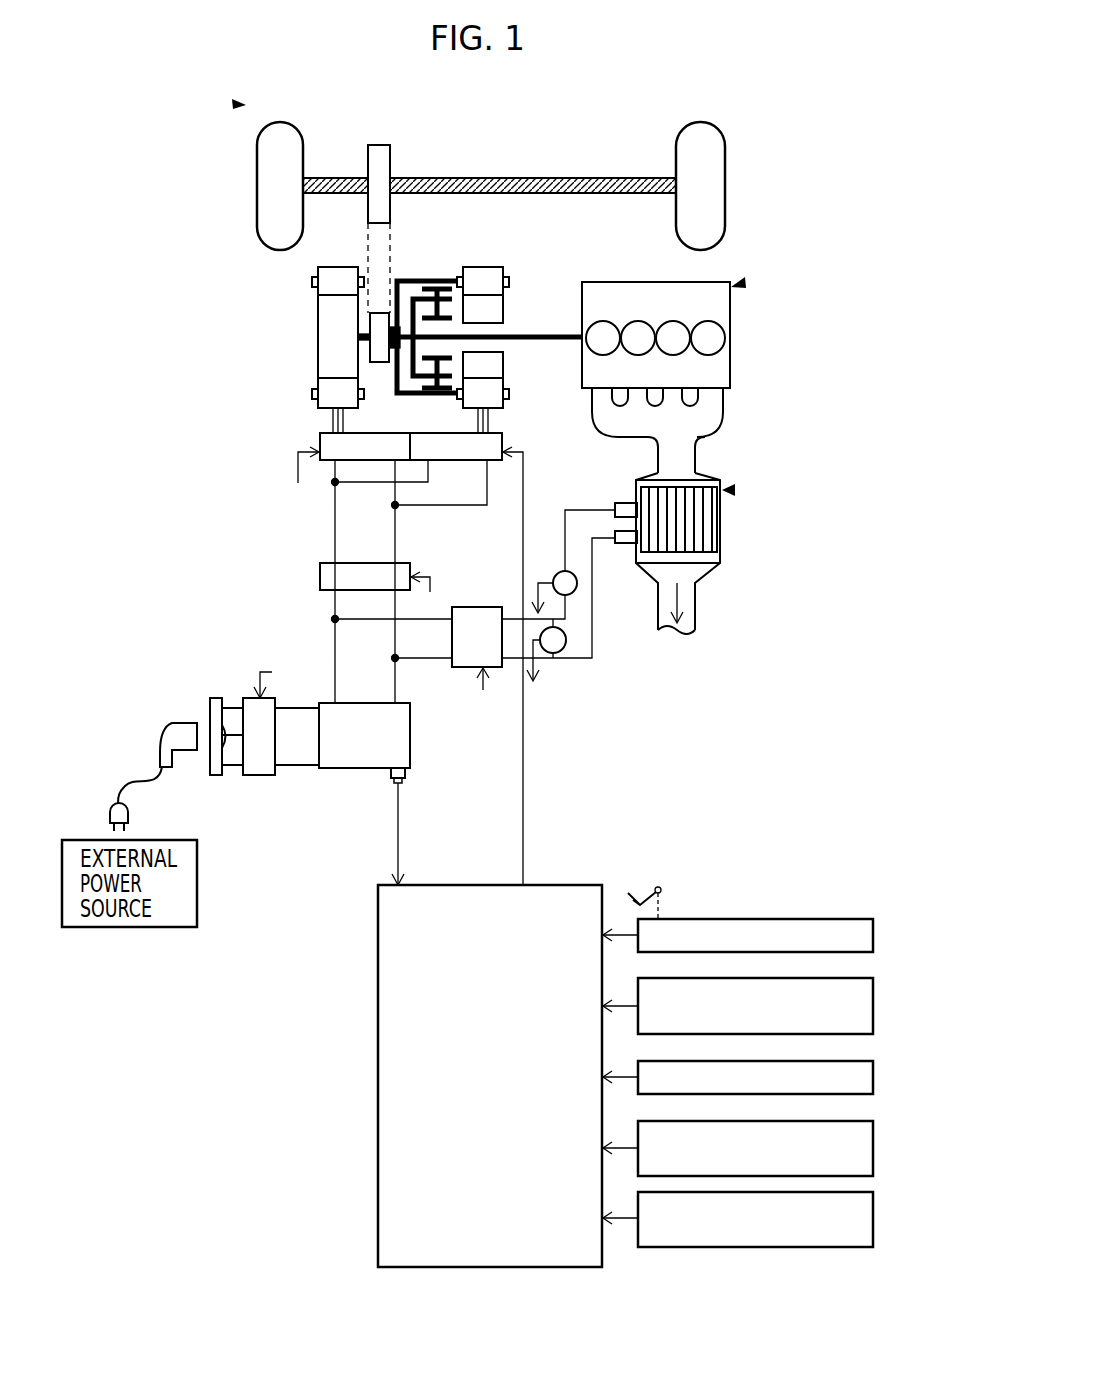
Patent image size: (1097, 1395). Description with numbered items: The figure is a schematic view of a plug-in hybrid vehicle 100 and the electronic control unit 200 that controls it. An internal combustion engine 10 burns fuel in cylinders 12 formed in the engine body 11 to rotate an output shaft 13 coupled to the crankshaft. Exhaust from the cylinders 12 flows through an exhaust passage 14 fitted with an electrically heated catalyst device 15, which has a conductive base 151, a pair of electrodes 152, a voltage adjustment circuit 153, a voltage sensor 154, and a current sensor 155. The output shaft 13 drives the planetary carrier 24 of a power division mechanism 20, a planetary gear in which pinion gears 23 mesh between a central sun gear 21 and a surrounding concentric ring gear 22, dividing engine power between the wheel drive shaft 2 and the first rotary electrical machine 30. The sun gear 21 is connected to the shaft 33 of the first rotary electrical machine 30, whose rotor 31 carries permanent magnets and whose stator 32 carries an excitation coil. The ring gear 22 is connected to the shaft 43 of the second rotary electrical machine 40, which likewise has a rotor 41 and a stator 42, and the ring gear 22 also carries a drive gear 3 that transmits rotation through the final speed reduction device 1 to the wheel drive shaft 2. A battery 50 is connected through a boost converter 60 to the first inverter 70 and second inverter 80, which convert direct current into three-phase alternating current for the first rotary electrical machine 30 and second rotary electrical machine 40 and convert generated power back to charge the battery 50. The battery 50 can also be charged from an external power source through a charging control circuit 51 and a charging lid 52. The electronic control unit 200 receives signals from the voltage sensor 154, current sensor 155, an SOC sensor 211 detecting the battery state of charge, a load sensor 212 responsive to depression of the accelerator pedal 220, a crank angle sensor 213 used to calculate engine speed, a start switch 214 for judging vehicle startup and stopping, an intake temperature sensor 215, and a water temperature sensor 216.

The vehicle 100 is at (238, 104).
The final speed reduction device 1 is at (380, 145).
The wheel drive shaft 2 is at (322, 178).
The drive gear 3 is at (378, 364).
The internal combustion engine 10 is at (605, 317).
The engine body 11 is at (721, 308).
The cylinder 12 is at (710, 337).
The output shaft 13 is at (565, 330).
The exhaust passage 14 is at (700, 452).
The electrically heated catalyst device 15 is at (679, 548).
The conductive base 151 is at (690, 550).
The electrodes 152 is at (615, 534).
The power division mechanism 20 is at (487, 292).
The sun gear 21 is at (393, 232).
The ring gear 22 is at (411, 296).
The pinion gear 23 is at (440, 300).
The planetary carrier 24 is at (423, 289).
The first rotary electrical machine 30 is at (577, 212).
The rotor 31 is at (494, 307).
The stator 32 is at (494, 273).
The shaft 33 is at (487, 318).
The second rotary electrical machine 40 is at (252, 302).
The rotor 41 is at (333, 352).
The stator 42 is at (333, 388).
The shaft 43 is at (362, 332).
The battery 50 is at (412, 744).
The charging control circuit 51 is at (262, 776).
The charging lid 52 is at (215, 776).
The boost converter 60 is at (320, 572).
The first inverter 70 is at (503, 438).
The second inverter 80 is at (318, 444).
The voltage adjustment circuit 153 is at (484, 607).
The voltage sensor 154 is at (563, 653).
The current sensor 155 is at (560, 571).
The electronic control unit 200 is at (568, 883).
The SOC sensor 211 is at (405, 776).
The load sensor 212 is at (763, 919).
The crank angle sensor 213 is at (867, 978).
The start switch 214 is at (870, 1061).
The intake temperature sensor 215 is at (875, 1123).
The water temperature sensor 216 is at (875, 1195).
The accelerator pedal 220 is at (656, 878).